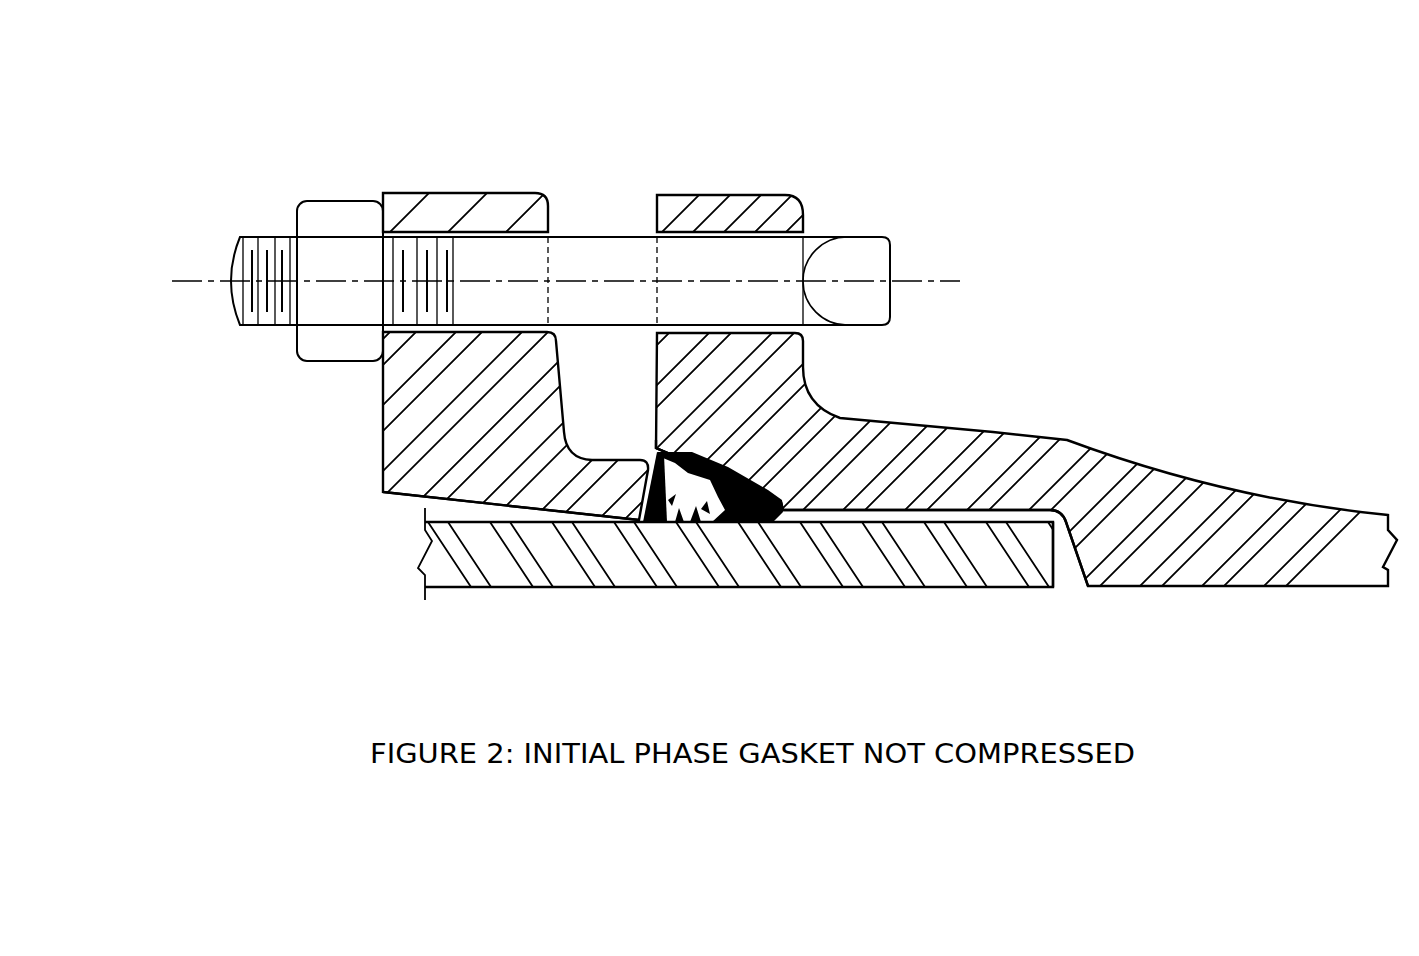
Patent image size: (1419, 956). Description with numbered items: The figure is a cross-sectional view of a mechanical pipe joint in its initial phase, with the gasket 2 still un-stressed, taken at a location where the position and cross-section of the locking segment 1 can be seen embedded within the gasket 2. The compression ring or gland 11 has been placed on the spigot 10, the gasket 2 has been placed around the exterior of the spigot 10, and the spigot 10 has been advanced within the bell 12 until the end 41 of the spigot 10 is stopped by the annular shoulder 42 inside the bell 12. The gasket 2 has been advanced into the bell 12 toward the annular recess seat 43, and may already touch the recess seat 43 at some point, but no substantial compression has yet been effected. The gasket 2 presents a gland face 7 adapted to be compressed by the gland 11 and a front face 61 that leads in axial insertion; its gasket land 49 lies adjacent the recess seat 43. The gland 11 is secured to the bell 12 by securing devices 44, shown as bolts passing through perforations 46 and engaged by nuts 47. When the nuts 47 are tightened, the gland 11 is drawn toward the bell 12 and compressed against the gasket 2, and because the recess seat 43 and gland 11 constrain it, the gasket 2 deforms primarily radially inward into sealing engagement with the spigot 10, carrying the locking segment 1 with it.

The locking segment 1 is at (693, 495).
The gasket 2 is at (755, 515).
The gland face 7 is at (647, 494).
The spigot 10 is at (803, 587).
The gland 11 is at (418, 193).
The bell 12 is at (728, 195).
The end of spigot 41 is at (1055, 570).
The annular shoulder 42 is at (1080, 565).
The recess seat 43 is at (780, 503).
The securing devices 44 is at (893, 267).
The perforations 46 is at (655, 233).
The nuts 47 is at (298, 213).
The gasket land 49 is at (663, 445).
The front face 61 is at (783, 511).